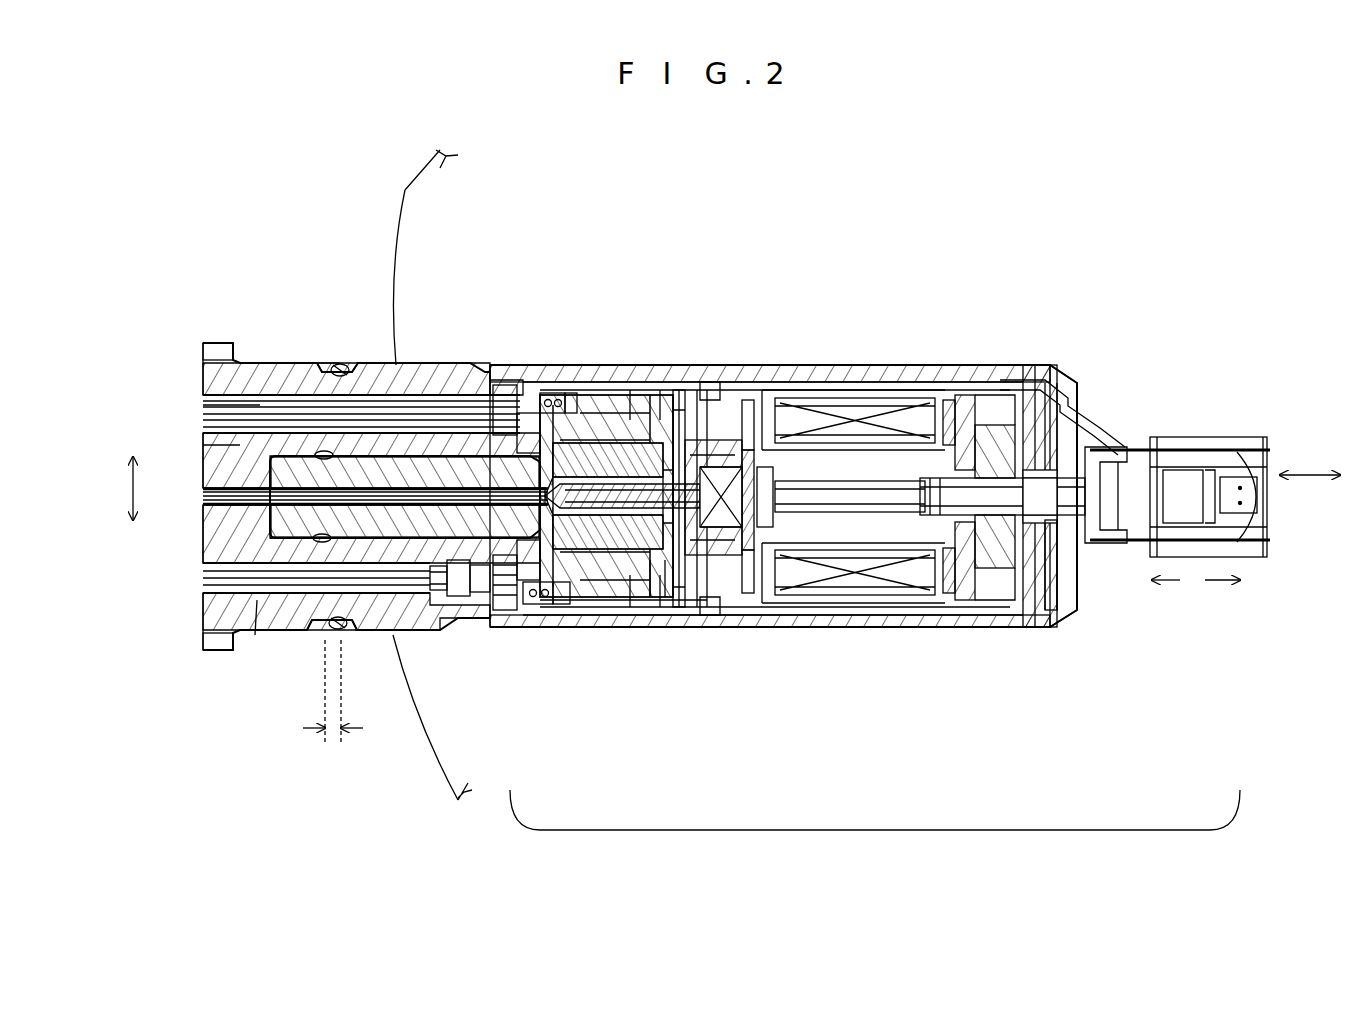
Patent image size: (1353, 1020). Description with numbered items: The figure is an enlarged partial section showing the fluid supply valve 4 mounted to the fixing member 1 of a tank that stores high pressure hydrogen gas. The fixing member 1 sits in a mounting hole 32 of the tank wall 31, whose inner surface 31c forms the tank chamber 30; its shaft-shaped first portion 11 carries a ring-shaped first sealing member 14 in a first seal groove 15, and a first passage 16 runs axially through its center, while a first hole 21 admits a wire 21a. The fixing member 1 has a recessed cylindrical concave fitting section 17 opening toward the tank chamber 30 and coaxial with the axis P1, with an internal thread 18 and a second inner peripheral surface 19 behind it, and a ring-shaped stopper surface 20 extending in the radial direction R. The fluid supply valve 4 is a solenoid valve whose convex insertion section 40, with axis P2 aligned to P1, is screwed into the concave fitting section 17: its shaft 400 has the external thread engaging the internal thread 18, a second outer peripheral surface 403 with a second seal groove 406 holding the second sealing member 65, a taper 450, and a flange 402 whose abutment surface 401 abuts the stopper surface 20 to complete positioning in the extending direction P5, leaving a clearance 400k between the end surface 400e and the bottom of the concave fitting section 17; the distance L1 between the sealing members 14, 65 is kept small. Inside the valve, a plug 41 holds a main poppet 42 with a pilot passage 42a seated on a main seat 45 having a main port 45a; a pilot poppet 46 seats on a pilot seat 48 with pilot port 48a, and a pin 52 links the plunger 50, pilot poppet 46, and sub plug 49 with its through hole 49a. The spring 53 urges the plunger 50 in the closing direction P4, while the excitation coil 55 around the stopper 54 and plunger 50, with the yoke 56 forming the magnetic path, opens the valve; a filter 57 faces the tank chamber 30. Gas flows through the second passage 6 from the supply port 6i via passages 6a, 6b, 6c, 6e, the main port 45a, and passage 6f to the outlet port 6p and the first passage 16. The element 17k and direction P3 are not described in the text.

The fixing member 1 is at (218, 634).
The fluid supply valve 4 is at (875, 833).
The second passage 6 is at (862, 380).
The passage 6a is at (1032, 376).
The passage 6b is at (892, 378).
The passage 6c is at (713, 384).
The passage 6e is at (646, 388).
The passage 6f is at (458, 600).
The supply port 6i is at (1085, 395).
The outlet port 6p is at (264, 633).
The first portion 11 is at (255, 635).
The first sealing member 14 is at (368, 371).
The first seal groove 15 is at (335, 368).
The first passage 16 is at (204, 494).
The concave fitting section 17 is at (398, 633).
The housing wall 17k is at (208, 446).
The internal thread 18 is at (461, 363).
The second inner peripheral surface 19 is at (377, 364).
The stopper surface 20 is at (552, 392).
The first hole 21 is at (206, 392).
The wire 21a is at (205, 410).
The tank chamber 30 is at (1177, 426).
The tank wall 31 is at (405, 190).
The inner surface 31c is at (437, 172).
The mounting hole 32 is at (227, 345).
The convex insertion section 40 is at (492, 385).
The plug 41 is at (618, 442).
The main poppet 42 is at (681, 430).
The pilot passage 42a is at (650, 630).
The main seat 45 is at (580, 630).
The main port 45a is at (556, 632).
The pilot poppet 46 is at (748, 432).
The pilot seat 48 is at (742, 628).
The pilot port 48a is at (710, 628).
The sub plug 49 is at (800, 398).
The through hole 49a is at (740, 420).
The plunger 50 is at (845, 628).
The pin 52 is at (797, 628).
The spring 53 is at (880, 418).
The stopper 54 is at (1040, 630).
The excitation coil 55 is at (948, 382).
The yoke 56 is at (990, 396).
The filter 57 is at (1060, 598).
The second sealing member 65 is at (347, 366).
The shaft 400 is at (462, 466).
The end surface 400e is at (268, 545).
The clearance 400k is at (268, 520).
The abutment surface 401 is at (514, 385).
The flange 402 is at (566, 405).
The second outer peripheral surface 403 is at (296, 362).
The second seal groove 406 is at (321, 363).
The taper 450 is at (283, 456).
The distance L1 is at (333, 709).
The radial direction R is at (114, 488).
The axis P1 is at (235, 472).
The axis P2 is at (1272, 498).
The direction P3 is at (1218, 585).
The valve-closing direction P4 is at (1170, 585).
The extending direction P5 is at (1306, 470).